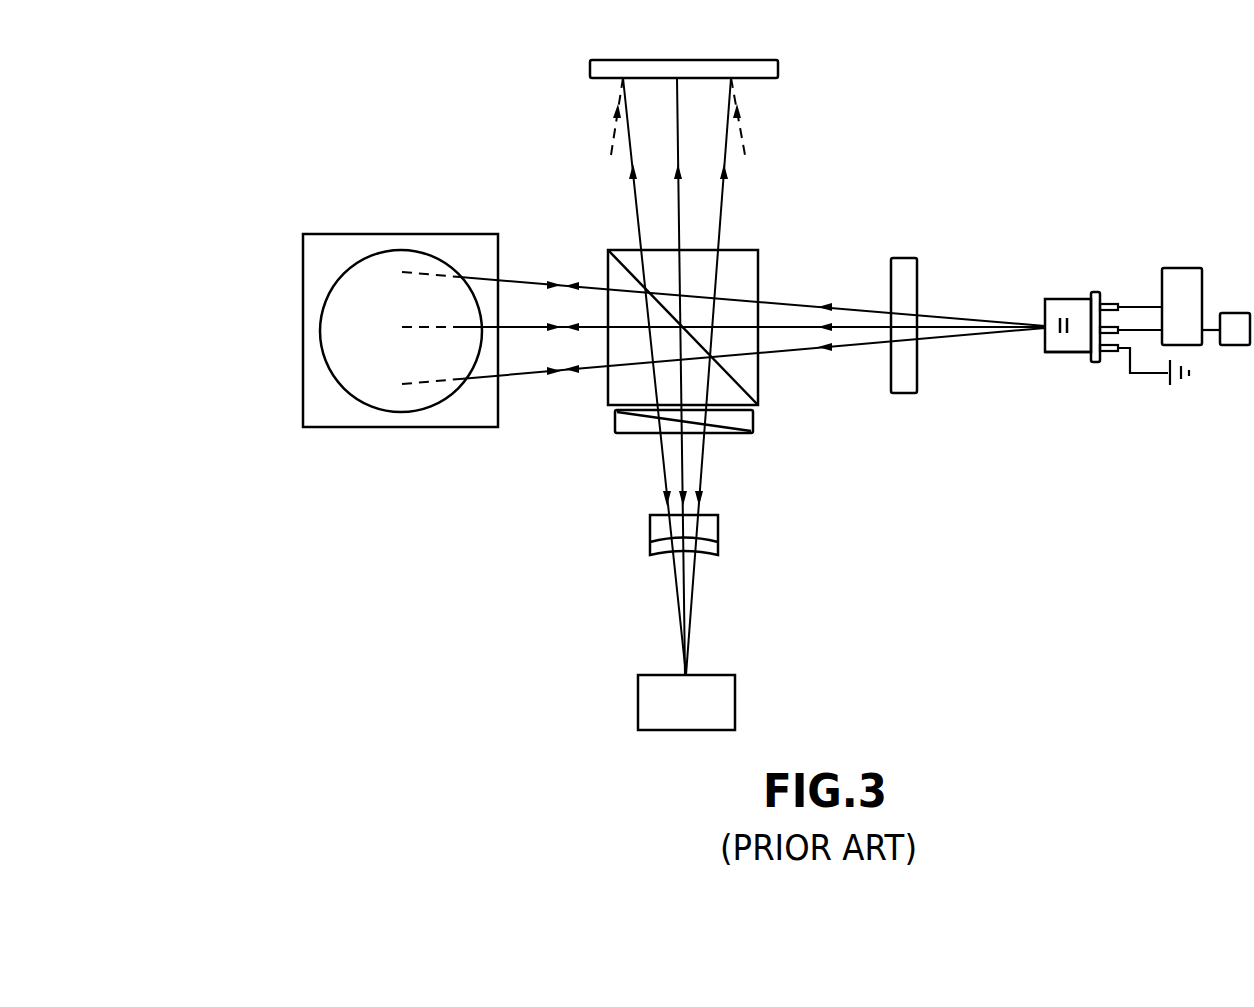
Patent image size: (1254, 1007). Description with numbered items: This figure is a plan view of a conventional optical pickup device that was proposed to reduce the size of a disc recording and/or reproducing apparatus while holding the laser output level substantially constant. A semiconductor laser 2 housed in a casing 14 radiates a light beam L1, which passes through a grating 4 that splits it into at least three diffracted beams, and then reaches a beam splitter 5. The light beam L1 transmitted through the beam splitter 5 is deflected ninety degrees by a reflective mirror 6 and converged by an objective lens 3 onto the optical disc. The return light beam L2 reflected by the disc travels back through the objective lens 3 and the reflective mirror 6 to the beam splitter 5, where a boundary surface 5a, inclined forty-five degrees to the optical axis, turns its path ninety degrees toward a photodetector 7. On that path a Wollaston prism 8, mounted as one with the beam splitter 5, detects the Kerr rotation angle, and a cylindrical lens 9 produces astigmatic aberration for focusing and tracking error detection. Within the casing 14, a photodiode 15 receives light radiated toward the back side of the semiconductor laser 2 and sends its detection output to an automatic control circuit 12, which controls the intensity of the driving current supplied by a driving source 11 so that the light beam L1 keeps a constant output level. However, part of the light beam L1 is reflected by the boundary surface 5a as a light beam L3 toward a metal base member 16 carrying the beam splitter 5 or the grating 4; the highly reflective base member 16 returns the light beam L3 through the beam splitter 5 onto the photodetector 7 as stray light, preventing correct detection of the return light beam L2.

The semiconductor laser 2 is at (1060, 300).
The objective lens 3 is at (347, 360).
The grating 4 is at (905, 268).
The beam splitter 5 is at (628, 250).
The boundary surface 5a is at (621, 277).
The reflective mirror 6 is at (355, 420).
The photodetector 7 is at (735, 700).
The Wollaston prism 8 is at (757, 420).
The cylindrical lens 9 is at (720, 527).
The driving source 11 is at (1237, 345).
The automatic control circuit 12 is at (1183, 275).
The casing 14 is at (1045, 347).
The photodiode 15 is at (1091, 322).
The base member 16 is at (638, 62).
The light beam L1 is at (782, 323).
The return light beam L2 is at (522, 328).
The stray light beam L3 is at (680, 219).